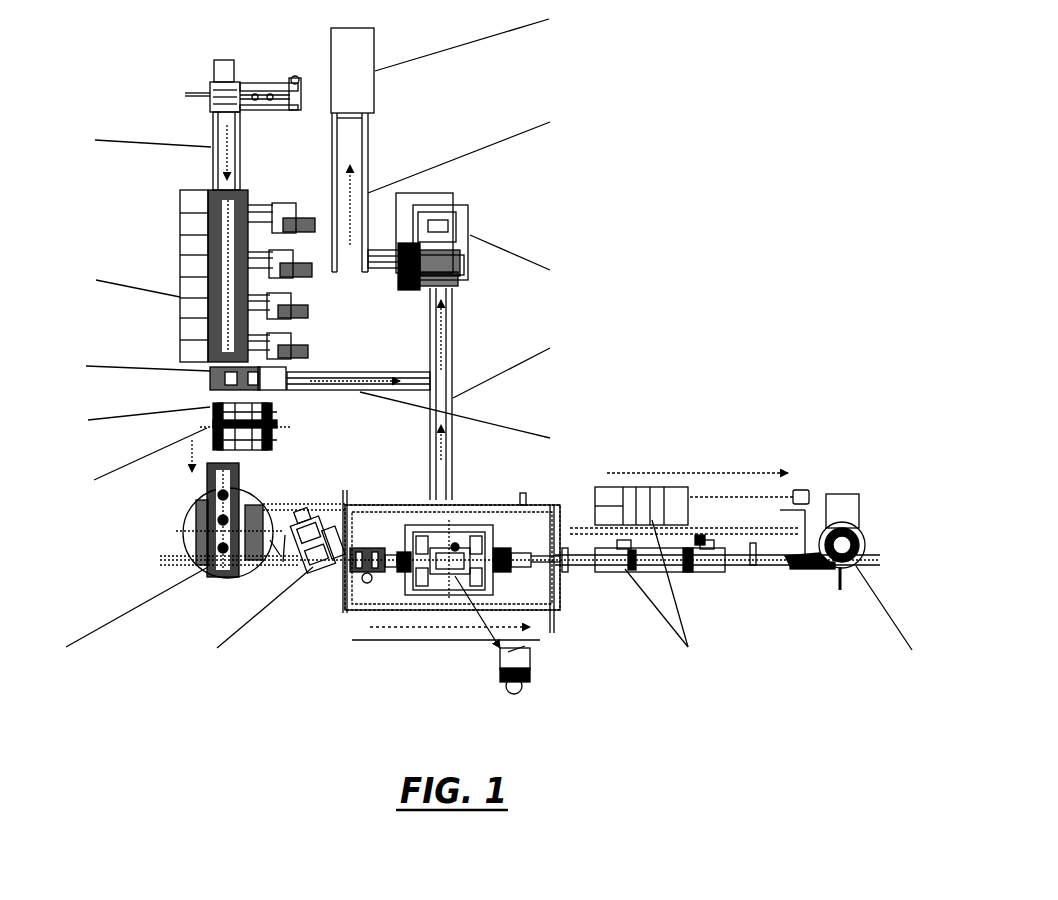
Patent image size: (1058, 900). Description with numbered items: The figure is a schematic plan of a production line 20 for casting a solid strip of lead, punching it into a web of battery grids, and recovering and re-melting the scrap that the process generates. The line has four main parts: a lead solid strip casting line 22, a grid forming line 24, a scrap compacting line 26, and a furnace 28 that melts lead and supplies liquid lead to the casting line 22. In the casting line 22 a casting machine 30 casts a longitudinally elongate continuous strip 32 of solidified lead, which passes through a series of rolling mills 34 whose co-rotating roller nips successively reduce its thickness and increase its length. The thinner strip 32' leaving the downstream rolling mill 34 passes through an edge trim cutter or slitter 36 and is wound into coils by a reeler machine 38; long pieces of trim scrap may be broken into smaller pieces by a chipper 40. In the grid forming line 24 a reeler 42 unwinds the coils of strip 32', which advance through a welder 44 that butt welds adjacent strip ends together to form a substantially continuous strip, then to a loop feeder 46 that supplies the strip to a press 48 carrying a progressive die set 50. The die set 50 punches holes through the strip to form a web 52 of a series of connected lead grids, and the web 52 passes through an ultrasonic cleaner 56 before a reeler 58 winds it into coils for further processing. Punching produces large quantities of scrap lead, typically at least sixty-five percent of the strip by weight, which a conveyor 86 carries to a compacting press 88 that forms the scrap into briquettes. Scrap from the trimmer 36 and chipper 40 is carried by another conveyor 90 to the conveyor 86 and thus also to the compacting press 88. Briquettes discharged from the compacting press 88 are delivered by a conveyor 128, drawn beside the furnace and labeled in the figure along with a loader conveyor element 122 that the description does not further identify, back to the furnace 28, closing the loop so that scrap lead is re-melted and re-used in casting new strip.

The production line 20 is at (662, 132).
The lead solid strip casting line 22 is at (156, 202).
The grid forming line 24 is at (431, 666).
The scrap compacting line 26 is at (478, 211).
The furnace 28 is at (378, 40).
The casting machine 30 is at (190, 80).
The continuous strip of solidified lead 32 is at (141, 151).
The elongate strip 32' is at (198, 465).
The rolling mills 34 is at (176, 263).
The edge trim cutter and/or slitter 36 is at (203, 387).
The reeler machine 38 is at (206, 428).
The chipper 40 is at (272, 392).
The reeler 42 is at (176, 549).
The welder 44 is at (312, 572).
The loop feeder 46 is at (370, 582).
The press 48 is at (418, 596).
The progressive die set 50 is at (456, 546).
The web 52 is at (585, 567).
The ultrasonic cleaner 56 is at (670, 572).
The reeler 58 is at (836, 578).
The conveyor 86 is at (453, 348).
The compacting press 88 is at (466, 276).
The conveyor 90 is at (391, 372).
The loader conveyor 122 is at (378, 222).
The conveyor 128 is at (368, 131).